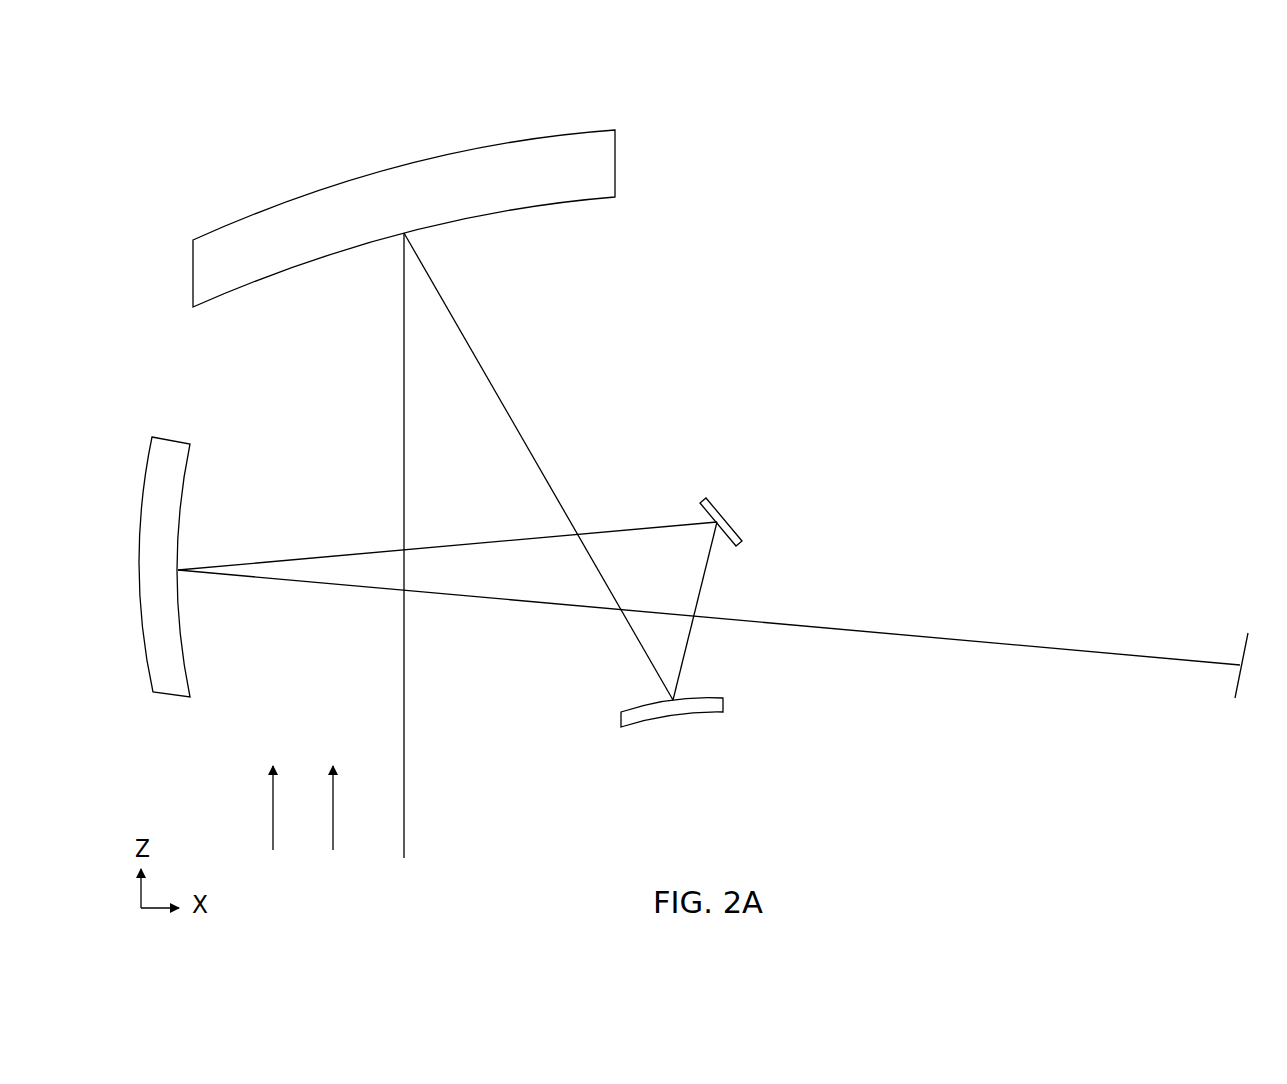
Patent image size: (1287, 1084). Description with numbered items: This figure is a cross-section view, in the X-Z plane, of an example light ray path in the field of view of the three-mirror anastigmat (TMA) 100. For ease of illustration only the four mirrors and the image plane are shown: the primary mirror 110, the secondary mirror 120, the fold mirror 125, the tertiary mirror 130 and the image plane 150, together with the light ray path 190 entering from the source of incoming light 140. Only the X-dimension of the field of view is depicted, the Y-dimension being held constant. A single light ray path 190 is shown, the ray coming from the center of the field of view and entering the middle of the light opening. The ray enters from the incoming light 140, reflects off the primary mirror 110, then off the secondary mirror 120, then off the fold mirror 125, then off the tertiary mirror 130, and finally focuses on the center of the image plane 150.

The three-mirror anastigmat (TMA) 100 is at (1165, 206).
The primary mirror 110 is at (615, 167).
The secondary mirror 120 is at (687, 713).
The fold mirror 125 is at (723, 522).
The tertiary mirror 130 is at (170, 440).
The incoming light 140 is at (328, 914).
The image plane 150 is at (1231, 722).
The light ray path 190 is at (709, 545).